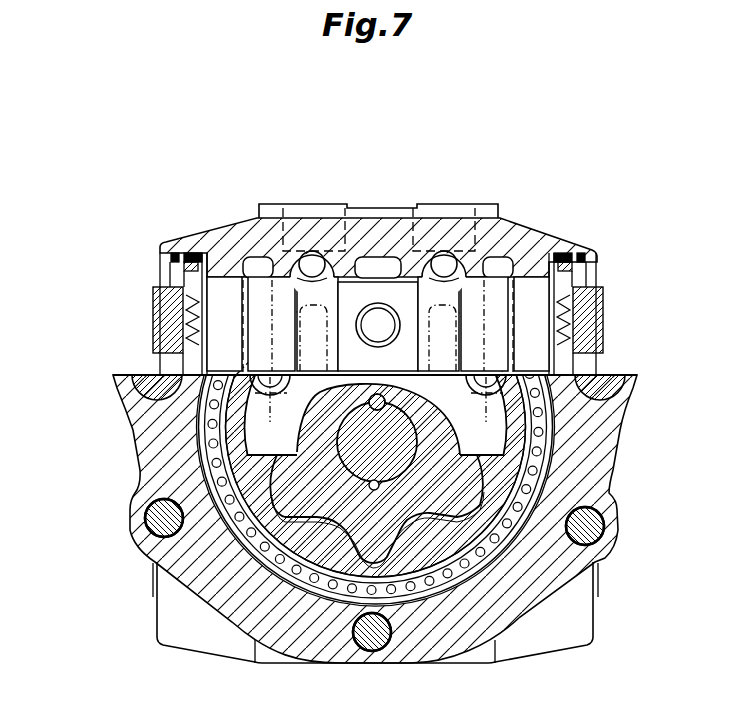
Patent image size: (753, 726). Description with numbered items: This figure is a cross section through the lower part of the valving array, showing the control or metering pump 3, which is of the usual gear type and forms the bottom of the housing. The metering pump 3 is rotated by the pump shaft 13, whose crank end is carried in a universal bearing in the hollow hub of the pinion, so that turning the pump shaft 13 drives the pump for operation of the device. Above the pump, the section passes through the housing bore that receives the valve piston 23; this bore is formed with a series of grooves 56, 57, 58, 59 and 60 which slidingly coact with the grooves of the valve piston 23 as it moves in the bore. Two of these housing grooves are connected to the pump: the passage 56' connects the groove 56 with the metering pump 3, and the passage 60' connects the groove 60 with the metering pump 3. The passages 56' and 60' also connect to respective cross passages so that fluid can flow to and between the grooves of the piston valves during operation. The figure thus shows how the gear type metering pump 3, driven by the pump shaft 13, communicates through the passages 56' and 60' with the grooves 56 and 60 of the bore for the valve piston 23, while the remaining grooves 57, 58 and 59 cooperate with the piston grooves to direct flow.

The metering pump 3 is at (616, 603).
The pump shaft 13 is at (387, 442).
The valve piston 23 is at (227, 290).
The groove 56 is at (511, 235).
The passage 56' is at (581, 387).
The groove 57 is at (446, 258).
The groove 58 is at (379, 270).
The groove 59 is at (310, 256).
The groove 60 is at (252, 235).
The passage 60' is at (167, 418).